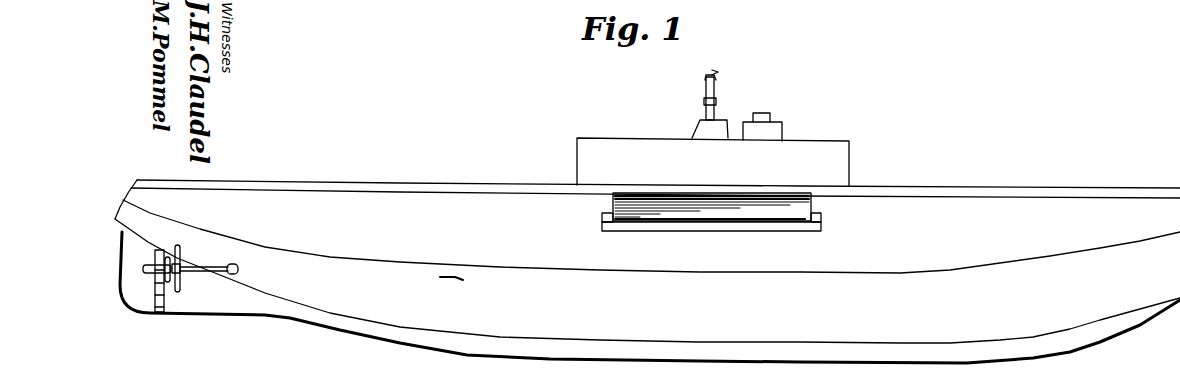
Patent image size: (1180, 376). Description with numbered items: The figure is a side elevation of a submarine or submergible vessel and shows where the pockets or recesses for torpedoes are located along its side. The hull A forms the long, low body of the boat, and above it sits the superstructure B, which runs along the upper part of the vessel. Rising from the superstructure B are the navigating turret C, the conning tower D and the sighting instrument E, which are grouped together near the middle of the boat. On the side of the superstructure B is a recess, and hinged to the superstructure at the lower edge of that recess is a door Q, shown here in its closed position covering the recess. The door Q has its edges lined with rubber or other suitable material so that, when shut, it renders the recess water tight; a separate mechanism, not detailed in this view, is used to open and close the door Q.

The hull A is at (647, 291).
The superstructure B is at (647, 230).
The navigating turret C is at (713, 162).
The conning tower D is at (773, 130).
The sighting instrument E is at (707, 92).
The door Q is at (687, 211).